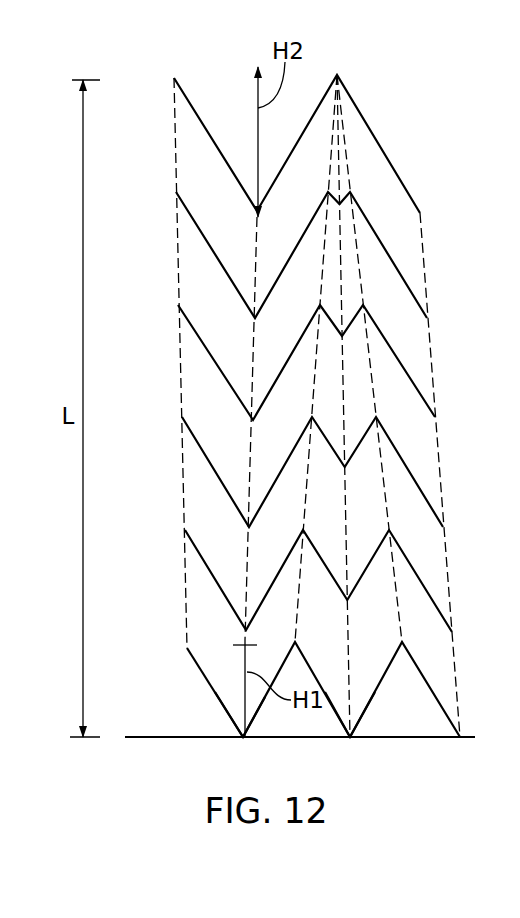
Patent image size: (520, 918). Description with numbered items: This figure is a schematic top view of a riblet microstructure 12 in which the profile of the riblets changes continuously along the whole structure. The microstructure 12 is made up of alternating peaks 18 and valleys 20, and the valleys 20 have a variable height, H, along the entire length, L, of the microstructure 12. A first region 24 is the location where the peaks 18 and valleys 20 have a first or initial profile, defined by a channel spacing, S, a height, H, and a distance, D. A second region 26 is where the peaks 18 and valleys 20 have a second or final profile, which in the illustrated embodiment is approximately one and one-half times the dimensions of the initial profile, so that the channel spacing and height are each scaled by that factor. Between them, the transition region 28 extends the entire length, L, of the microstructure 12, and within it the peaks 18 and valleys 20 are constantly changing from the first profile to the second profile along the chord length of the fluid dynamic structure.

The microstructure 12 is at (300, 394).
The peaks 18 is at (290, 628).
The valleys 20 is at (243, 728).
The first region 24 is at (176, 612).
The second region 26 is at (167, 155).
The transition region 28 is at (176, 360).